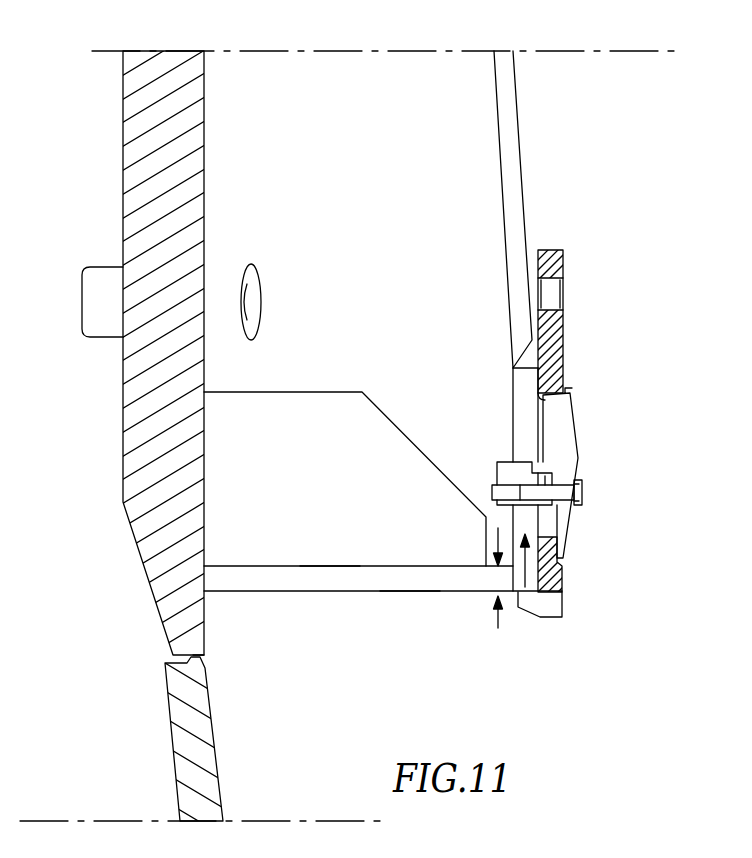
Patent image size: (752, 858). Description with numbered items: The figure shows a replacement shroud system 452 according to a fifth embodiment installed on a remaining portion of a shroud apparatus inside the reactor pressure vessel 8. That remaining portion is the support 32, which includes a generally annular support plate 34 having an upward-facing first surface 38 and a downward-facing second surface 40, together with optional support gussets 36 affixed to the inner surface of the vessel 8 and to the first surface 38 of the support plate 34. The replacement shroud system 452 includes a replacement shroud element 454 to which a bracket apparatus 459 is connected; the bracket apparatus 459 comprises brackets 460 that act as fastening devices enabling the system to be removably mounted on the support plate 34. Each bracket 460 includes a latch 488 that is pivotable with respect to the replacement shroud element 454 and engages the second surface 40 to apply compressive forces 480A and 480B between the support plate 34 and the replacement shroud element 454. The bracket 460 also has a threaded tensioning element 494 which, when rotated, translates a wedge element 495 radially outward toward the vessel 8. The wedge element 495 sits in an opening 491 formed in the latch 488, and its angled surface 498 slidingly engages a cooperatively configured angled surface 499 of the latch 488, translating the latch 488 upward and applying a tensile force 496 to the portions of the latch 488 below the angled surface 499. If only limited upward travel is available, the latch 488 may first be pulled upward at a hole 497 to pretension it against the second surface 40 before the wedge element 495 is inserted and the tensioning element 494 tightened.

The reactor pressure vessel 8 is at (123, 358).
The support 32 is at (245, 602).
The support plate 34 is at (302, 591).
The support gussets 36 is at (270, 392).
The first surface 38 is at (327, 565).
The second surface 40 is at (412, 591).
The replacement shroud system 452 is at (571, 199).
The replacement shroud element 454 is at (526, 145).
The bracket apparatus 459 is at (603, 393).
The bracket 460 is at (585, 525).
The compressive force 480A is at (497, 535).
The compressive force 480B is at (498, 628).
The latch 488 is at (575, 588).
The opening 491 is at (540, 428).
The tensioning element 494 is at (585, 492).
The wedge element 495 is at (578, 432).
The tensile force 496 is at (520, 569).
The hole 497 is at (550, 283).
The angled surface 498 is at (565, 390).
The angled surface 499 is at (538, 405).